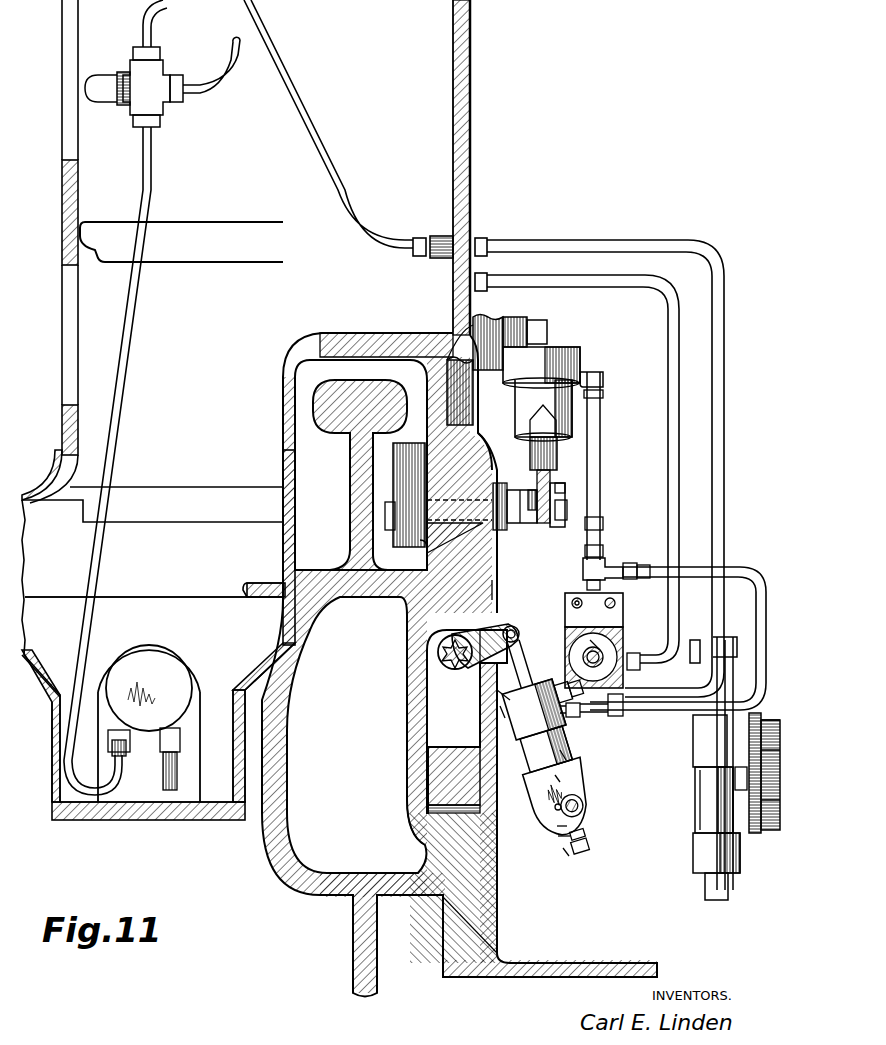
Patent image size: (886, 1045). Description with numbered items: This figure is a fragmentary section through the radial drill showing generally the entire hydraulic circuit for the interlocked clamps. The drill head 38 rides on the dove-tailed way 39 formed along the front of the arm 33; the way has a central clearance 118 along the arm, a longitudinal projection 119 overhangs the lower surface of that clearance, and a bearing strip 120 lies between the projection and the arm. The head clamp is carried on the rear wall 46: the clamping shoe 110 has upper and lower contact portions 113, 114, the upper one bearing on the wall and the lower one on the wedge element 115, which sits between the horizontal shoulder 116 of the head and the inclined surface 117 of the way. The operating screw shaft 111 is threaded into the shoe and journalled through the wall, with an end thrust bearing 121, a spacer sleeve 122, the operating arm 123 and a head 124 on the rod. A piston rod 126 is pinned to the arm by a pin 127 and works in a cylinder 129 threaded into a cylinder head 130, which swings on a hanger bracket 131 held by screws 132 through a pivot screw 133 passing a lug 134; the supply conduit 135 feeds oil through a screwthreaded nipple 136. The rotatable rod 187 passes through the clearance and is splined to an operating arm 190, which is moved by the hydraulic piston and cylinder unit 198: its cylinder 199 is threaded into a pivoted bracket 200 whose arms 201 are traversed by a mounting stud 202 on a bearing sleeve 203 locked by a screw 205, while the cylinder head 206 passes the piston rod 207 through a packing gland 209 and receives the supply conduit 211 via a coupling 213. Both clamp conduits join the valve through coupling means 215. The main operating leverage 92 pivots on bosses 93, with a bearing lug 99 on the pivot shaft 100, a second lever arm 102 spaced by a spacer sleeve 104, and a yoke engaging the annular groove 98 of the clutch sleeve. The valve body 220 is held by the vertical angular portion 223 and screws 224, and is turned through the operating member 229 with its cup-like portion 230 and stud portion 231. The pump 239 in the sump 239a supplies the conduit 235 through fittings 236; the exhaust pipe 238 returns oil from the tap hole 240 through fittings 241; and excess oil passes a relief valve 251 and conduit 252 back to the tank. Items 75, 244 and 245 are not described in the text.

The arm 33 is at (350, 541).
The drill head 38 is at (470, 57).
The way 39 is at (494, 590).
The rear wall 46 is at (445, 340).
The gear 75 is at (750, 833).
The main operating leverage 92 is at (735, 775).
The bosses 93 is at (697, 735).
The annular groove 98 is at (768, 833).
The bearing lug 99 is at (705, 810).
The pivot shaft 100 is at (708, 890).
The second lever arm 102 is at (690, 645).
The spacer sleeve 104 is at (735, 655).
The clamping shoe 110 is at (410, 487).
The operating screw shaft 111 is at (484, 485).
The upper contact portion 113 is at (390, 452).
The lower contact portion 114 is at (420, 545).
The wedge element 115 is at (478, 560).
The horizontal shoulder 116 is at (470, 540).
The inclined surface 117 is at (403, 593).
The clearance 118 is at (415, 720).
The longitudinal projection 119 is at (450, 757).
The bearing strip 120 is at (440, 825).
The end thrust bearing 121 is at (500, 528).
The spacer sleeve 122 is at (540, 528).
The operating arm 123 is at (560, 495).
The head 124 is at (565, 509).
The piston rod 126 is at (557, 462).
The pin 127 is at (550, 480).
The cylinder 129 is at (578, 413).
The cylinder head 130 is at (568, 352).
The hanger bracket 131 is at (488, 325).
The screws 132 is at (420, 400).
The pivot screw 133 is at (548, 326).
The lug 134 is at (525, 322).
The supply conduit 135 is at (575, 500).
The screwthreaded nipple 136 is at (598, 372).
The rotatable rod 187 is at (443, 660).
The operating arm 190 is at (470, 668).
The hydraulic piston and cylinder unit 198 is at (505, 715).
The cylinder 199 is at (563, 758).
The pivoted bracket 200 is at (563, 780).
The arms 201 is at (573, 803).
The mounting stud 202 is at (565, 812).
The bearing sleeve 203 is at (568, 830).
The screw 205 is at (565, 850).
The cylinder head 206 is at (540, 690).
The piston rod 207 is at (518, 645).
The packing gland 209 is at (500, 700).
The supply conduit 211 is at (648, 715).
The coupling 213 is at (573, 718).
The coupling means 215 is at (603, 522).
The valve body 220 is at (620, 618).
The vertical angular portion 223 is at (617, 612).
The screws 224 is at (583, 603).
The operating member 229 is at (585, 655).
The cup-like portion 230 is at (578, 600).
The stud portion 231 is at (608, 667).
The conduit 235 is at (724, 542).
The fittings 236 is at (613, 712).
The exhaust pipe 238 is at (675, 492).
The pump 239 is at (160, 665).
The sump 239a is at (210, 610).
The tap hole 240 is at (520, 625).
The fittings 241 is at (632, 662).
The tee 244 is at (583, 571).
The nut 245 is at (633, 565).
The relief valve 251 is at (162, 95).
The conduit 252 is at (214, 88).